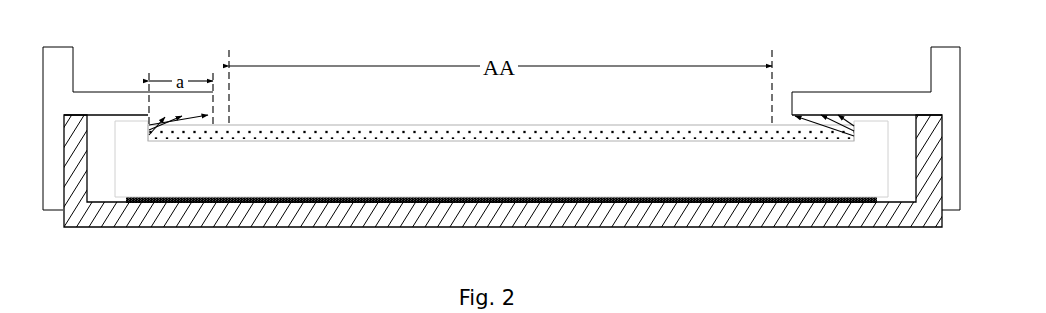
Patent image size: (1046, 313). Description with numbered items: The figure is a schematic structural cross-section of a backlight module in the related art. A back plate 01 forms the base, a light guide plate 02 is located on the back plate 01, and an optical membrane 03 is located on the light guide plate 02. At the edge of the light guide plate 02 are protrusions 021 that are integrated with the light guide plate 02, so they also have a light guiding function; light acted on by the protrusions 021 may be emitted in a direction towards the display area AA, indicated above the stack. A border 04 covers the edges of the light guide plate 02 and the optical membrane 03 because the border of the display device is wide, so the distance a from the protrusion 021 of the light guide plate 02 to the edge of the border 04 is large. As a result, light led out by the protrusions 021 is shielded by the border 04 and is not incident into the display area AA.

The back plate 01 is at (379, 218).
The light guide plate 02 is at (502, 175).
The protrusions 021 is at (135, 130).
The optical membrane 03 is at (643, 135).
The border 04 is at (54, 174).